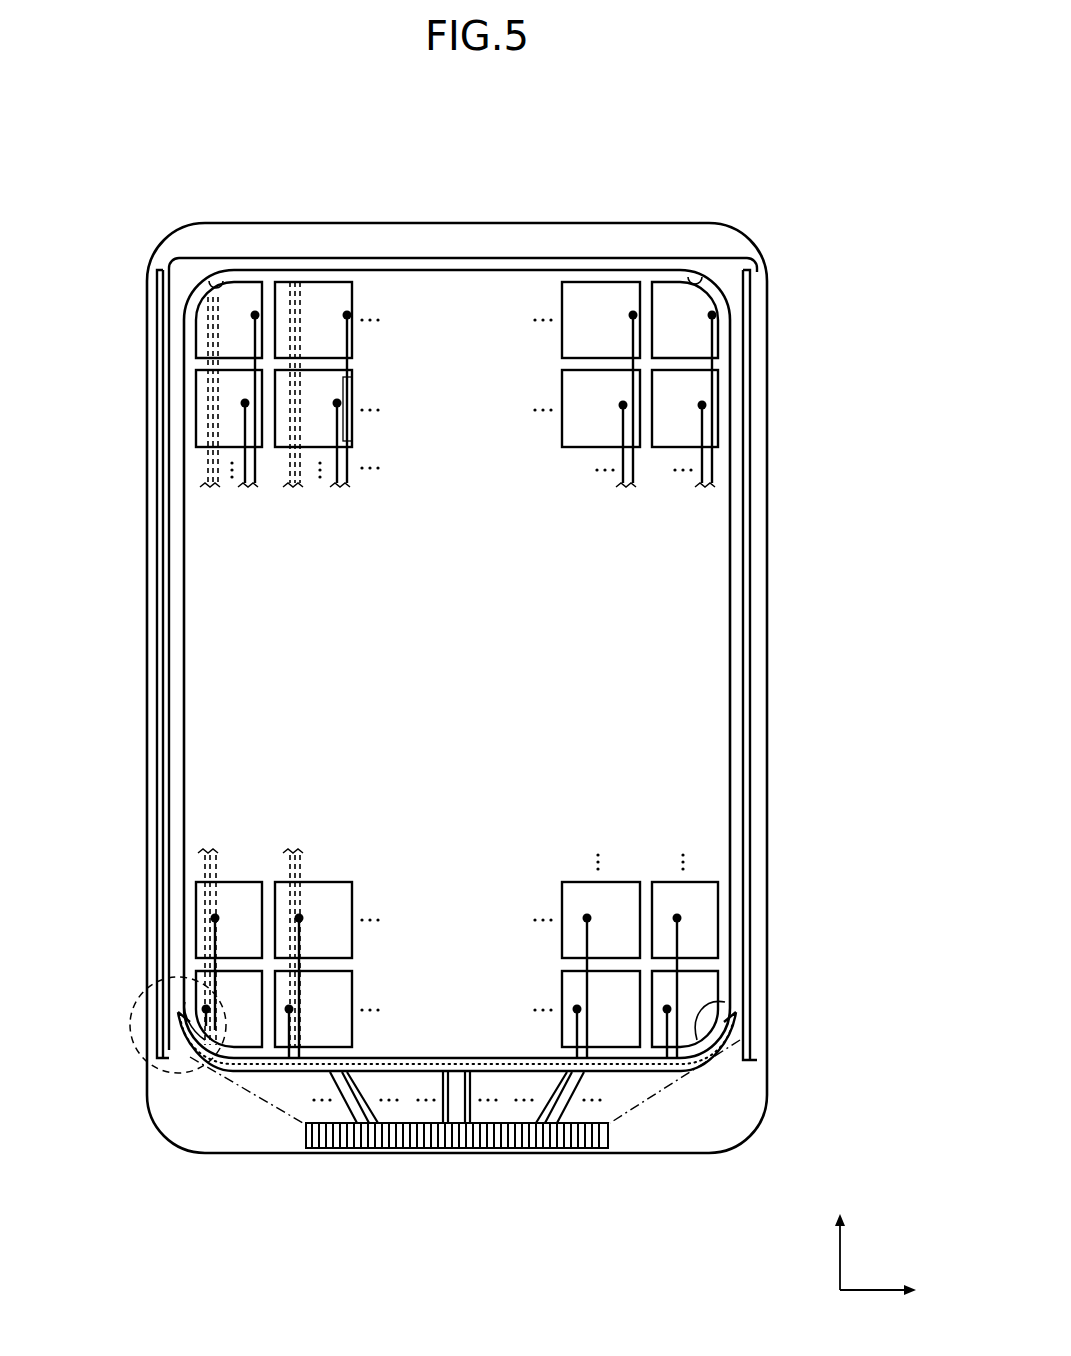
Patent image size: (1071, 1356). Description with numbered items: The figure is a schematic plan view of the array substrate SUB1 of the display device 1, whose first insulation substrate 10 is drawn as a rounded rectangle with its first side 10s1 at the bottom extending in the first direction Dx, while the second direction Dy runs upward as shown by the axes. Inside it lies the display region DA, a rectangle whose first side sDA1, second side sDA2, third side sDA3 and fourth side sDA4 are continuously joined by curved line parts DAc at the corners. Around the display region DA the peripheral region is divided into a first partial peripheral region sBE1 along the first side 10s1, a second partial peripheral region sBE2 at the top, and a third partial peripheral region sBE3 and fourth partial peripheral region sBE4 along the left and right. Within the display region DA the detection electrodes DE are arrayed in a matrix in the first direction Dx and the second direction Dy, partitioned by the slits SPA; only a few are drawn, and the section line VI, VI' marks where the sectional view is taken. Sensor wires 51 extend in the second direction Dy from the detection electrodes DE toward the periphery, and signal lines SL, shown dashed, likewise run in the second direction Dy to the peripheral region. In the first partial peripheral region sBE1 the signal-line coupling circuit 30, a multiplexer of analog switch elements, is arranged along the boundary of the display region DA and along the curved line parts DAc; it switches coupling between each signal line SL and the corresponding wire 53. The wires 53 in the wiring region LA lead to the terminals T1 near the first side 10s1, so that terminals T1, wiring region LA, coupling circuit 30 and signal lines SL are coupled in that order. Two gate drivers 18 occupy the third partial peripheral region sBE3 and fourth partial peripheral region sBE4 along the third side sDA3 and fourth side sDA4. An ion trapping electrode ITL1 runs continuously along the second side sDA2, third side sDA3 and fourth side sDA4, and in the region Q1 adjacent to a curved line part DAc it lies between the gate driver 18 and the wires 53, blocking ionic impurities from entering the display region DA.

The display device 1 is at (770, 175).
The array substrate SUB1 is at (767, 297).
The first insulation substrate 10 is at (822, 329).
The display region DA is at (730, 590).
The curved line part DAc is at (218, 281).
The gate driver 18 is at (157, 688).
The ion trapping electrode ITL1 is at (750, 876).
The detection electrode DE is at (196, 405).
The signal line SL is at (205, 463).
The sensor wire 51 is at (700, 458).
The section line VI is at (374, 404).
The section line VI' is at (377, 440).
The slit SPA is at (555, 365).
The region Q1 is at (130, 1027).
The wiring region LA is at (707, 1073).
The wire 53 is at (330, 1076).
The signal-line coupling circuit 30 is at (408, 1072).
The terminal T1 is at (608, 1136).
The first side 10s1 is at (335, 1155).
The first partial peripheral region sBE1 is at (247, 1162).
The second partial peripheral region sBE2 is at (420, 216).
The third partial peripheral region sBE3 is at (140, 740).
The fourth partial peripheral region sBE4 is at (775, 737).
The first side of the display region sDA1 is at (493, 1045).
The second side of the display region sDA2 is at (527, 280).
The third side of the display region sDA3 is at (195, 806).
The fourth side of the display region sDA4 is at (720, 792).
The first direction Dx is at (895, 1290).
The second direction Dy is at (840, 1236).